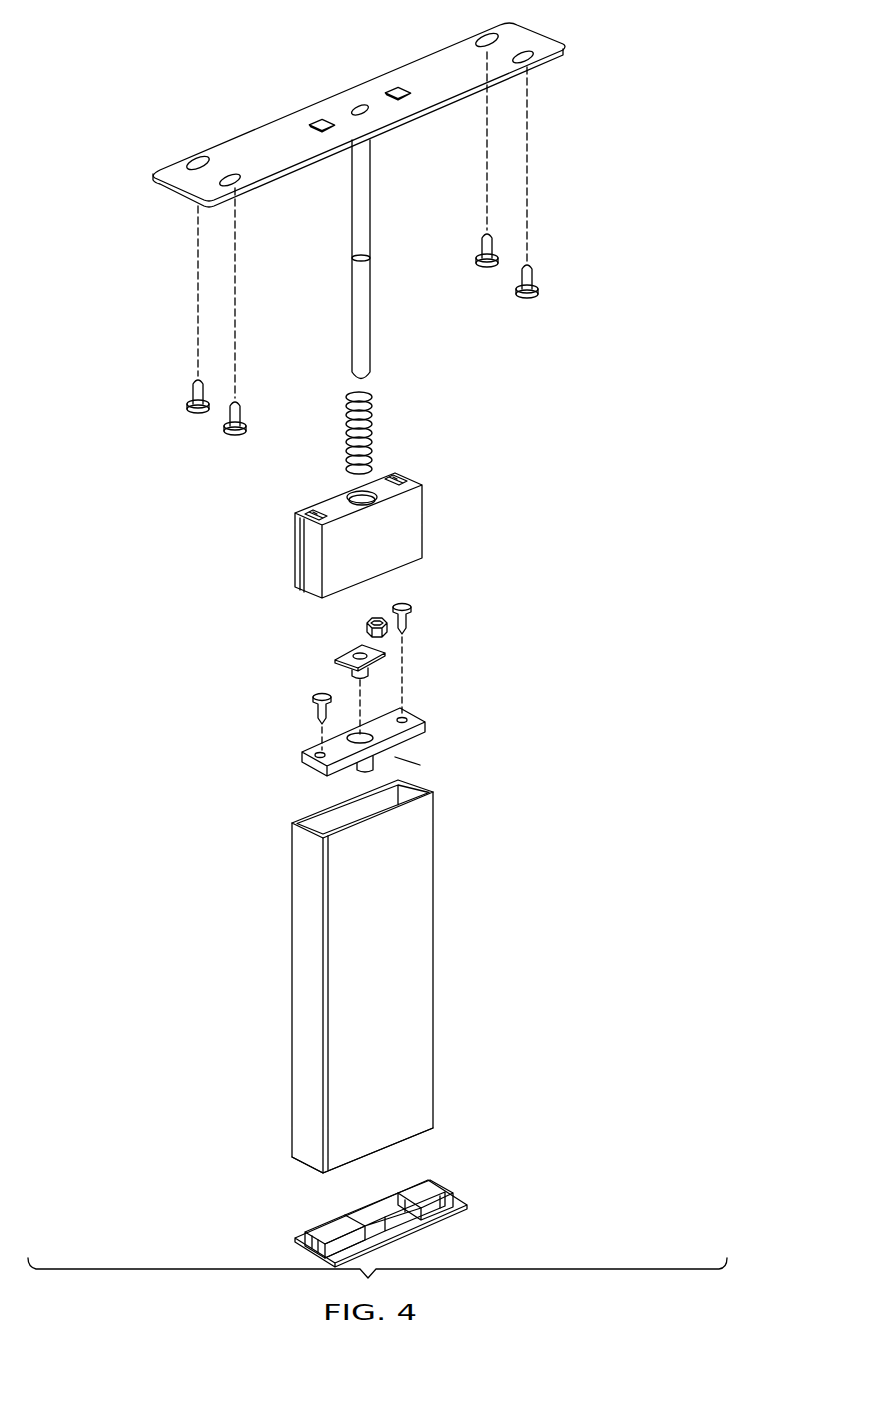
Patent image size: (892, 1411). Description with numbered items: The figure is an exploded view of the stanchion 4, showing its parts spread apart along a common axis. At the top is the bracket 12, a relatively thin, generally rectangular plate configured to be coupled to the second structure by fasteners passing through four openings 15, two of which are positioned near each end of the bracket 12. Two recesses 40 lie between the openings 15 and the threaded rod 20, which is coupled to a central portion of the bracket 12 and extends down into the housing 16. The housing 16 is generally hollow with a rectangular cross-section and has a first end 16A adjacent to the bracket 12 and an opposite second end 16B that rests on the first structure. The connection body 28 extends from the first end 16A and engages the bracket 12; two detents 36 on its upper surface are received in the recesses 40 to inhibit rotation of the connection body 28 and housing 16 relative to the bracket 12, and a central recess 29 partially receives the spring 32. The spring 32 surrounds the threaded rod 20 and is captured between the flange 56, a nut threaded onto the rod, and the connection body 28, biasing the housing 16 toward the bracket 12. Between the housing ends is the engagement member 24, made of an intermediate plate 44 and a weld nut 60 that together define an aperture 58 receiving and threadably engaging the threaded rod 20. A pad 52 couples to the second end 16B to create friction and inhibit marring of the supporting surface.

The stanchion 4 is at (398, 980).
The bracket 12 is at (267, 130).
The openings 15 is at (196, 158).
The housing 16 is at (390, 980).
The first end 16A is at (390, 813).
The second end 16B is at (367, 1155).
The threaded rod 20 is at (352, 233).
The engagement member 24 is at (395, 757).
The connection body 28 is at (373, 507).
The recess 29 is at (350, 495).
The spring 32 is at (372, 400).
The detents 36 is at (312, 508).
The recesses 40 is at (310, 122).
The intermediate plate 44 is at (418, 729).
The pad 52 is at (302, 1237).
The flange 56 is at (387, 632).
The aperture 58 is at (358, 735).
The weld nut 60 is at (338, 658).